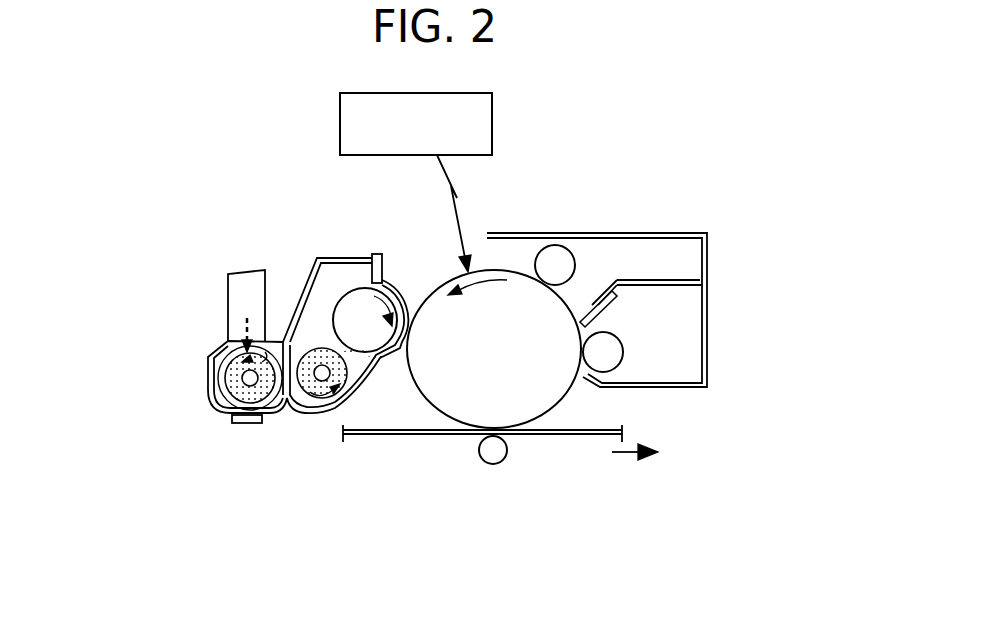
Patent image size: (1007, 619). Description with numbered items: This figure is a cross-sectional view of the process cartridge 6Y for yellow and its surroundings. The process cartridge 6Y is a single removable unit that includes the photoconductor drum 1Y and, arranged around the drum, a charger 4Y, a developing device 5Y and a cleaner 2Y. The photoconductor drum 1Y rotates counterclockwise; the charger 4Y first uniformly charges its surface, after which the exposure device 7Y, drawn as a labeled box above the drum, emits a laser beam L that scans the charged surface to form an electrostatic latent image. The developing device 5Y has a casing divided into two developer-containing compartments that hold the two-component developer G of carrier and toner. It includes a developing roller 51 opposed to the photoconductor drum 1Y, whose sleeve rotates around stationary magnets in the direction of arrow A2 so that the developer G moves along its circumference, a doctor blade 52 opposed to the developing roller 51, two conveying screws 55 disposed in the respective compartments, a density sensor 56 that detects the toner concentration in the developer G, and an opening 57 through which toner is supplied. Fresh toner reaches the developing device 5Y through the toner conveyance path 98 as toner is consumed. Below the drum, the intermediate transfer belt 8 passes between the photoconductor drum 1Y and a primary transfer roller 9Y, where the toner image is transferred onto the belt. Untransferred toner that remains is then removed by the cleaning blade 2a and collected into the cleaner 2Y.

The photoconductor drum 1Y is at (548, 392).
The cleaner 2Y is at (660, 280).
The cleaning blade 2a is at (600, 310).
The charger 4Y is at (557, 258).
The developing device 5Y is at (300, 281).
The process cartridge 6Y is at (340, 229).
The exposure device 7Y is at (492, 126).
The laser beam L is at (462, 238).
The intermediate transfer belt 8 is at (573, 436).
The primary transfer roller 9Y is at (493, 452).
The developing roller 51 is at (402, 338).
The doctor blade 52 is at (388, 276).
The rotation direction of developing roller sleeve A2 is at (375, 316).
The developer G is at (345, 352).
The conveying screws 55 is at (302, 402).
The density sensor 56 is at (246, 423).
The opening 57 is at (238, 343).
The toner conveyance path 98 is at (228, 284).